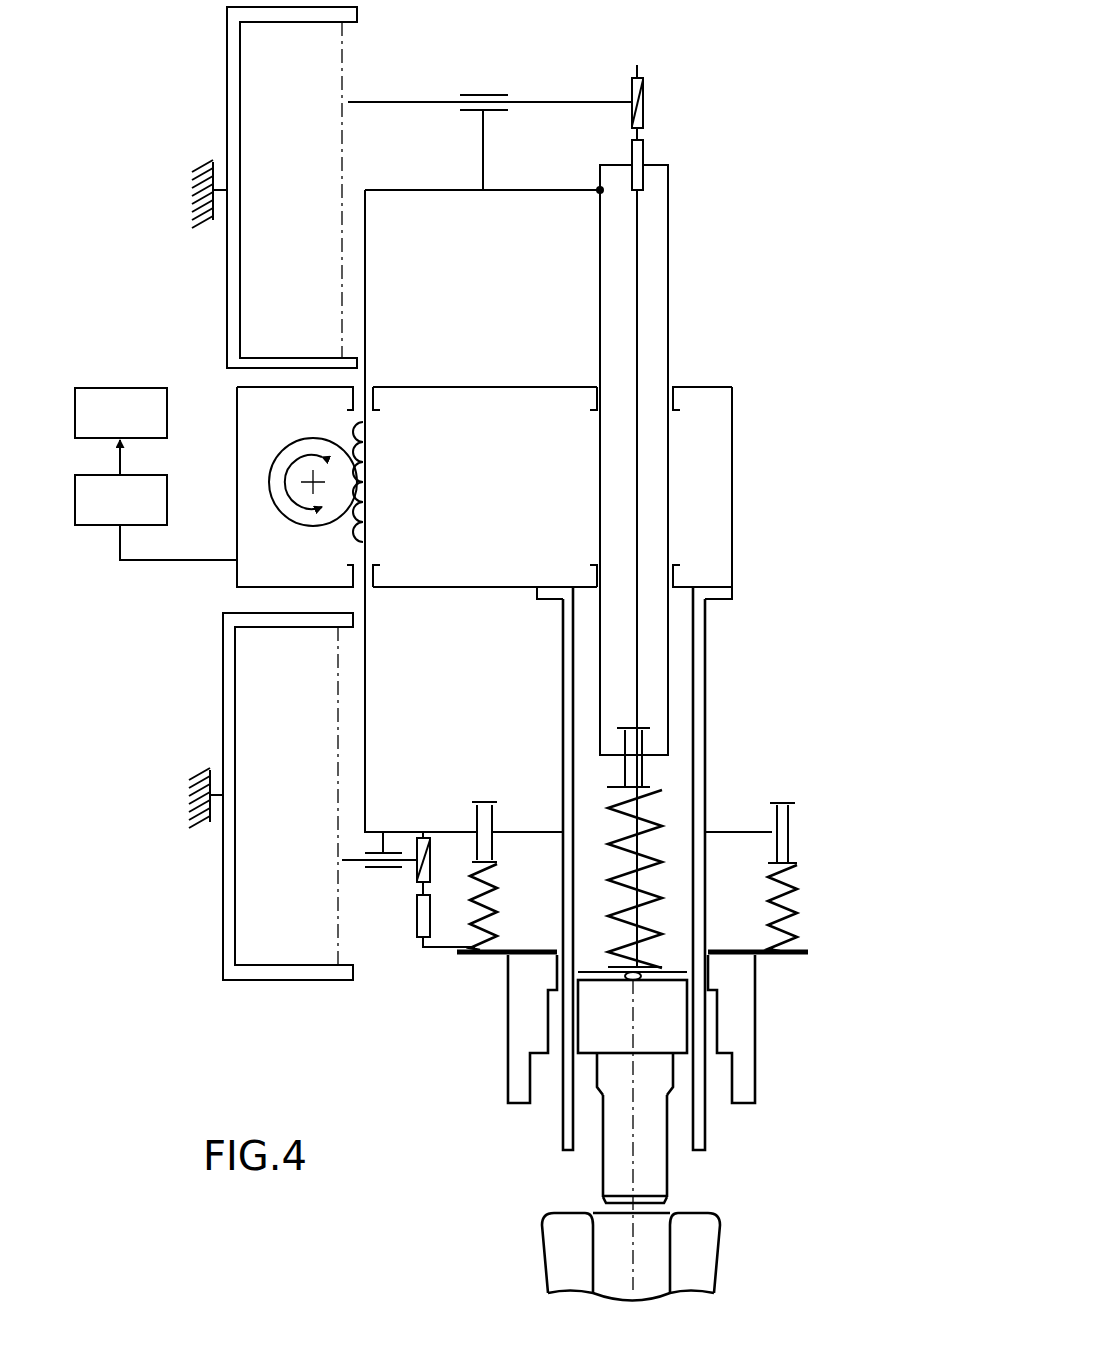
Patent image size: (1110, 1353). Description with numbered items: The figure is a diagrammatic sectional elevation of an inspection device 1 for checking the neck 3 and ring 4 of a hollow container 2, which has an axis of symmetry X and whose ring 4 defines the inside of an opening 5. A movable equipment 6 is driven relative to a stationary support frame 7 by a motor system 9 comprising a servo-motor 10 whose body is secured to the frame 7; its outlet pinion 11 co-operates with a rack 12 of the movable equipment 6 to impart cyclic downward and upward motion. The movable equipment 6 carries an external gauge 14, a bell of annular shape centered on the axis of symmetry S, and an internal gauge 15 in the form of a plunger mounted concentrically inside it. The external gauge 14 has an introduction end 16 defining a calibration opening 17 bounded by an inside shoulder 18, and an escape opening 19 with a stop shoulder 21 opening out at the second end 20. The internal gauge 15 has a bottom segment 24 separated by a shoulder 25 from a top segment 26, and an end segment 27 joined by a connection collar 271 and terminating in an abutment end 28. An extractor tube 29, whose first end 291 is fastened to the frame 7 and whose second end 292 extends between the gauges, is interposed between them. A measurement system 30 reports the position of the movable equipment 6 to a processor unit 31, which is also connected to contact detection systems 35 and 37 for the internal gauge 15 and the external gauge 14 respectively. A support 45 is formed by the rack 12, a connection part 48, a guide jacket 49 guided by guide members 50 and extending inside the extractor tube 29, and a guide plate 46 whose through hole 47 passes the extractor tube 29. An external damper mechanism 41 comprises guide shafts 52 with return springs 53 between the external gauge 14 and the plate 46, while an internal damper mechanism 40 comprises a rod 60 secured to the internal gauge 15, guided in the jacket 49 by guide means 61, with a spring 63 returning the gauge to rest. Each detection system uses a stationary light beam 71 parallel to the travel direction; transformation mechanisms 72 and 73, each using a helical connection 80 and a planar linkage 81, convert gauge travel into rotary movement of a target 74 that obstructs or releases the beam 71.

The inspection device 1 is at (757, 352).
The hollow container 2 is at (706, 1283).
The neck 3 is at (565, 1280).
The ring 4 is at (712, 1220).
The opening 5 is at (592, 1258).
The movable equipment 6 is at (375, 1028).
The support frame 7 is at (205, 220).
The motor system 9 is at (480, 385).
The servo-motor 10 is at (237, 585).
The outlet pinion 11 is at (313, 438).
The rack 12 is at (365, 445).
The external gauge 14 is at (506, 1050).
The internal gauge 15 is at (669, 1130).
The introduction end 16 is at (520, 1104).
The calibration opening 17 is at (722, 1090).
The inside shoulder 18 is at (733, 1066).
The escape opening 19 is at (556, 1012).
The second end 20 is at (525, 958).
The stop shoulder 21 is at (548, 990).
The bottom segment 24 is at (574, 1082).
The shoulder 25 is at (673, 1056).
The top segment 26 is at (577, 1046).
The end segment 27 is at (668, 1165).
The connection collar 271 is at (602, 1100).
The abutment end 28 is at (636, 1215).
The extractor tube 29 is at (706, 676).
The first end 291 is at (732, 592).
The second end 292 is at (565, 1148).
The measurement system 30 is at (121, 482).
The processor unit 31 is at (121, 413).
The contact detection system 35 is at (169, 399).
The contact detection system 37 is at (169, 425).
The internal damper mechanism 40 is at (664, 834).
The external damper mechanism 41 is at (497, 890).
The support 45 is at (372, 668).
The guide part 46 is at (447, 830).
The through hole 47 is at (560, 830).
The connection part 48 is at (552, 188).
The guide jacket 49 is at (670, 312).
The guide members 50 is at (678, 415).
The guide shafts 52 is at (796, 906).
The return spring 53 is at (793, 876).
The rod 60 is at (640, 220).
The guide means 61 is at (643, 162).
The spring 63 is at (665, 787).
The light beam 71 is at (342, 167).
The transformation mechanism 72 is at (612, 52).
The transformation mechanism 73 is at (413, 950).
The target 74 is at (350, 100).
The helical connection 80 is at (643, 92).
The planar linkage 81 is at (485, 86).
The axis of symmetry S is at (636, 1014).
The axis of symmetry X is at (633, 1263).